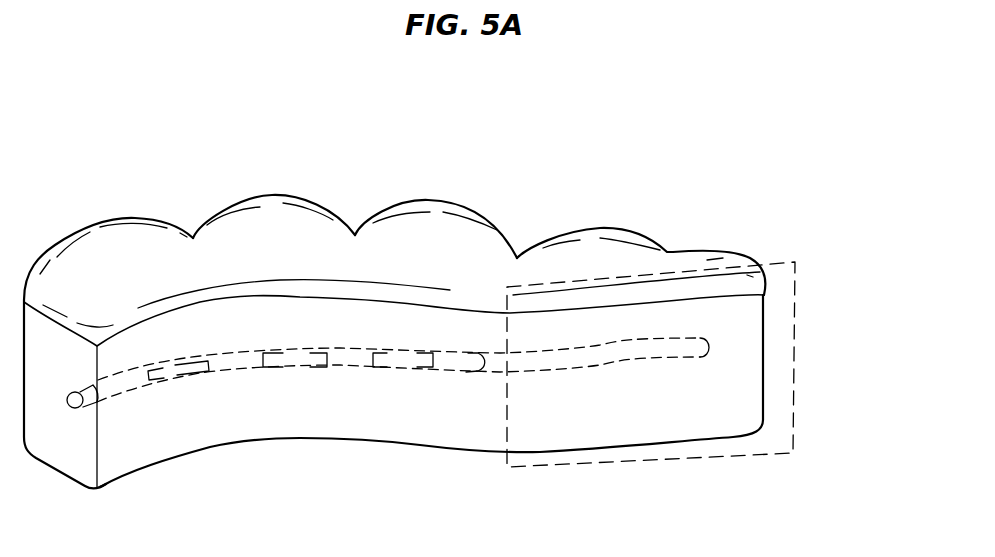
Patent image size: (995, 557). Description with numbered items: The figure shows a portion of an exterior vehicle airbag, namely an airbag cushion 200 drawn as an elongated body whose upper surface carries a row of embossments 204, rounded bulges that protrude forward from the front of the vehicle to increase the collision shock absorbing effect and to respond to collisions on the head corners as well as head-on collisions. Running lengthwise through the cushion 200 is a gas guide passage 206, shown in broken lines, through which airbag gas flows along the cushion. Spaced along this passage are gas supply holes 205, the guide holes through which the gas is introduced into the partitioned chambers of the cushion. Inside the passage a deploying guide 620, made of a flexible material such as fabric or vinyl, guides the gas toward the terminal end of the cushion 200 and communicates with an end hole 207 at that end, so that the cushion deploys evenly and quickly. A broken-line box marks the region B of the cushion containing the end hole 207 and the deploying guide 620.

The airbag cushion 200 is at (590, 260).
The embossments 204 is at (422, 200).
The detail region B is at (780, 262).
The gas supply holes 205 is at (283, 360).
The gas guide passage 206 is at (350, 358).
The end hole 207 is at (713, 348).
The deploying guide 620 is at (600, 357).